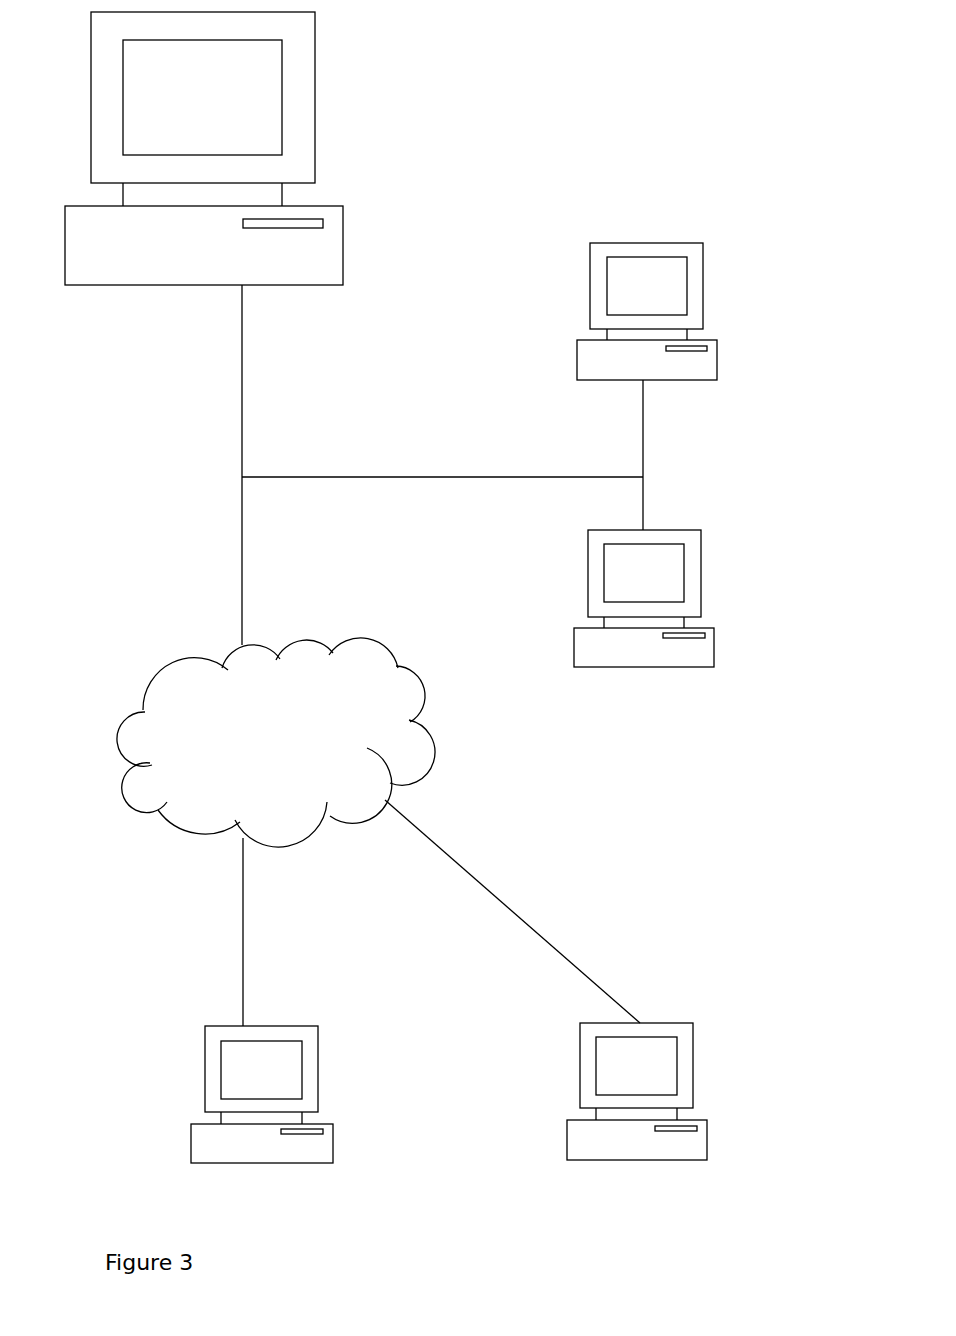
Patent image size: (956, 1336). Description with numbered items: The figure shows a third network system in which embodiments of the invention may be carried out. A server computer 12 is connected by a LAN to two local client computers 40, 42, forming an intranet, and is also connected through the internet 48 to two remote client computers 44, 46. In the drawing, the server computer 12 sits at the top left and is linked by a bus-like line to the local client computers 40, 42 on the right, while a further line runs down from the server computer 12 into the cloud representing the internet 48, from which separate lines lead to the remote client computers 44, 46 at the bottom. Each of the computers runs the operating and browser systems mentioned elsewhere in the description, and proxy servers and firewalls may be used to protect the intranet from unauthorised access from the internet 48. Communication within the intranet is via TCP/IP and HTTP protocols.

The server computer 12 is at (326, 135).
The local client computer 40 is at (708, 289).
The local client computer 42 is at (712, 605).
The remote client computer 44 is at (195, 1084).
The remote client computer 46 is at (709, 1084).
The internet 48 is at (276, 742).